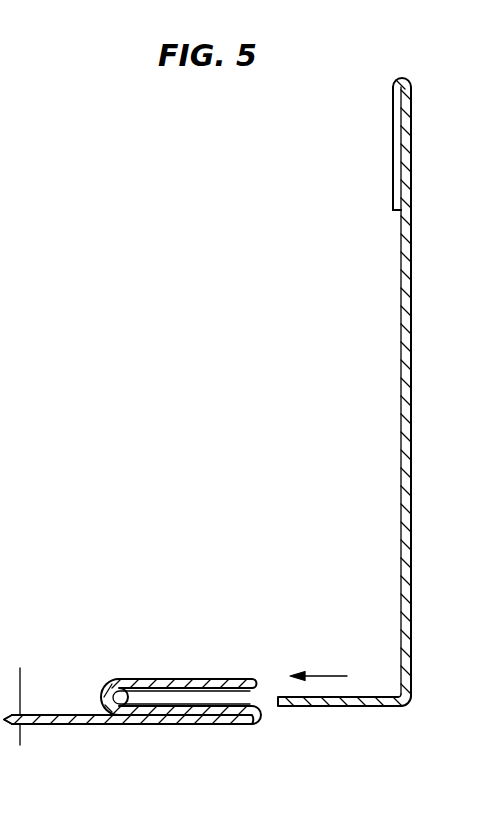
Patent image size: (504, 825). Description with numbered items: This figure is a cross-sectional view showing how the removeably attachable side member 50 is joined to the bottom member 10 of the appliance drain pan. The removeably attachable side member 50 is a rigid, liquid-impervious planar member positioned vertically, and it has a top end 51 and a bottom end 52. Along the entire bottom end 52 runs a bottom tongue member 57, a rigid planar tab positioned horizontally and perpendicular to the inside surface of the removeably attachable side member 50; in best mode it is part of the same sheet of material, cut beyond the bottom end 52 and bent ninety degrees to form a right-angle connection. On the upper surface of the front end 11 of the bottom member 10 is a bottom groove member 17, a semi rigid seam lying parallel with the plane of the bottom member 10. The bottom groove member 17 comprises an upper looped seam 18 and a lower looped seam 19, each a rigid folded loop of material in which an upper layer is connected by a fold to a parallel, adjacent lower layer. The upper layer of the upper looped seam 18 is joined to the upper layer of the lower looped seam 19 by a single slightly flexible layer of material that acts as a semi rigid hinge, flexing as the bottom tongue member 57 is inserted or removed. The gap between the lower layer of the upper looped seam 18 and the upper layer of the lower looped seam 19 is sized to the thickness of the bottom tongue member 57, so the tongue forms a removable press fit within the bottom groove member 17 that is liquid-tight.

The bottom member 10 is at (140, 725).
The front end 11 is at (140, 725).
The bottom groove member 17 is at (105, 725).
The upper looped seam 18 is at (245, 679).
The lower looped seam 19 is at (253, 725).
The removeably attachable side member 50 is at (411, 401).
The top end 51 is at (412, 150).
The bottom end 52 is at (411, 653).
The bottom tongue member 57 is at (348, 706).